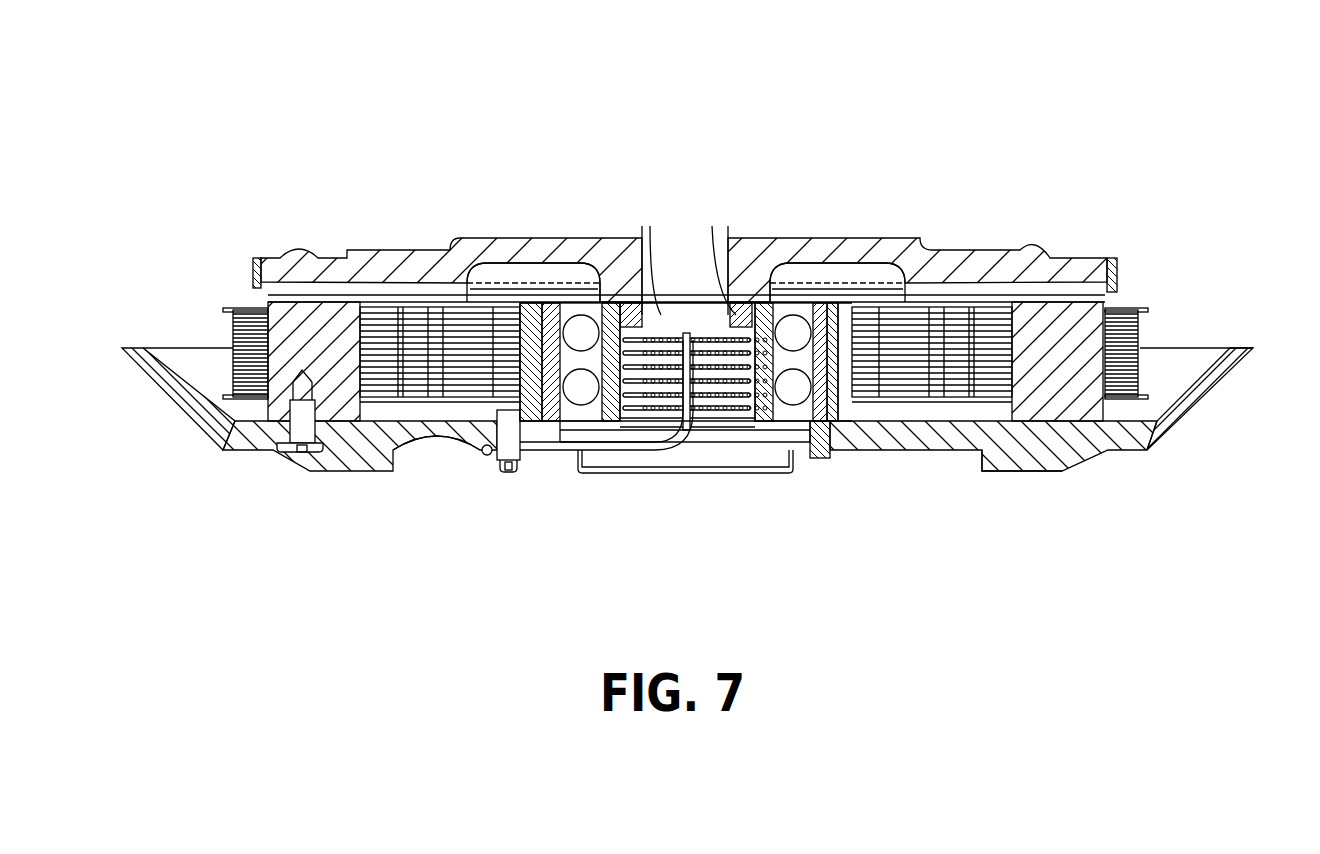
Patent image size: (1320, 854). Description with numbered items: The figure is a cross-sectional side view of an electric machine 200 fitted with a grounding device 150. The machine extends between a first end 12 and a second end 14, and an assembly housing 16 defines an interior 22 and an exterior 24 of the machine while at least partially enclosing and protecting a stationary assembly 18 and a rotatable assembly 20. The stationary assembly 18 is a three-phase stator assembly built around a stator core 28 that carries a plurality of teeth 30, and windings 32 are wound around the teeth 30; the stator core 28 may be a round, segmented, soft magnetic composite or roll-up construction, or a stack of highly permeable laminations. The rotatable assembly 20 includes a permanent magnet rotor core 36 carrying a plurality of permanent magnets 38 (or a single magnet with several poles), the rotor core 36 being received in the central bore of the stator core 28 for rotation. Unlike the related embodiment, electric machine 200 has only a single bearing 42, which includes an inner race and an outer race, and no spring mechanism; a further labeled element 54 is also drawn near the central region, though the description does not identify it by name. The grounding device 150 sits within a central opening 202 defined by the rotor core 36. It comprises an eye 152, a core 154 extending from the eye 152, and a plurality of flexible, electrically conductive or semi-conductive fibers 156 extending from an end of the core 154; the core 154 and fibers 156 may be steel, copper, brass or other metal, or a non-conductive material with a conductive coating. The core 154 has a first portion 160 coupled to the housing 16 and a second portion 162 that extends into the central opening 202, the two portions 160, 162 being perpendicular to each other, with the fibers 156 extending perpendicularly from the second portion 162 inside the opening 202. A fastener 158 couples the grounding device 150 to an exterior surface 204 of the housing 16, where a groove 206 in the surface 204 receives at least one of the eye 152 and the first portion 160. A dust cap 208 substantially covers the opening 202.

The electric machine 200 is at (213, 128).
The first end 12 is at (238, 208).
The second end 14 is at (226, 490).
The assembly housing 16 is at (1180, 408).
The stationary assembly 18 is at (1201, 341).
The rotatable assembly 20 is at (1066, 247).
The interior 22 is at (842, 413).
The exterior 24 is at (180, 407).
The stator core 28 is at (267, 300).
The teeth 30 is at (283, 323).
The windings 32 is at (243, 347).
The permanent magnet rotor core 36 is at (367, 262).
The permanent magnets 38 is at (1042, 285).
The first bearing 42 is at (820, 440).
The shaft 54 is at (662, 330).
The grounding device 150 is at (634, 470).
The eye 152 is at (483, 453).
The core 154 is at (567, 450).
The fibers 156 is at (736, 420).
The fastener 158 is at (508, 440).
The first portion 160 is at (600, 452).
The second portion 162 is at (687, 423).
The central opening 202 is at (737, 322).
The exterior surface 204 is at (998, 472).
The groove 206 is at (437, 438).
The dust cap 208 is at (773, 458).